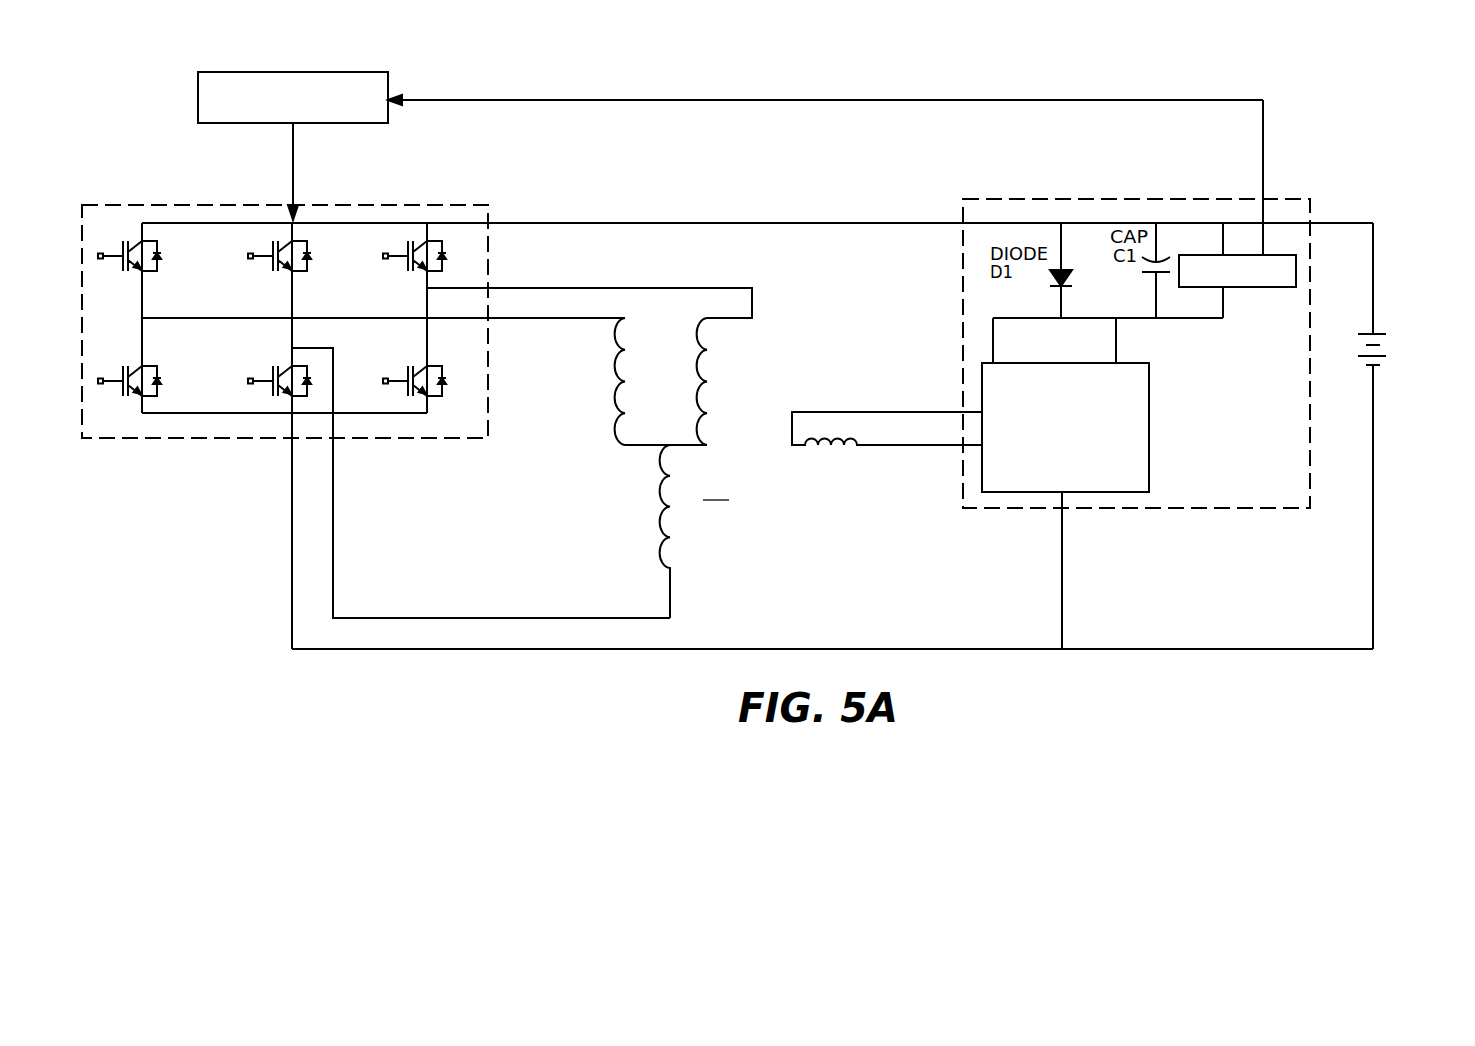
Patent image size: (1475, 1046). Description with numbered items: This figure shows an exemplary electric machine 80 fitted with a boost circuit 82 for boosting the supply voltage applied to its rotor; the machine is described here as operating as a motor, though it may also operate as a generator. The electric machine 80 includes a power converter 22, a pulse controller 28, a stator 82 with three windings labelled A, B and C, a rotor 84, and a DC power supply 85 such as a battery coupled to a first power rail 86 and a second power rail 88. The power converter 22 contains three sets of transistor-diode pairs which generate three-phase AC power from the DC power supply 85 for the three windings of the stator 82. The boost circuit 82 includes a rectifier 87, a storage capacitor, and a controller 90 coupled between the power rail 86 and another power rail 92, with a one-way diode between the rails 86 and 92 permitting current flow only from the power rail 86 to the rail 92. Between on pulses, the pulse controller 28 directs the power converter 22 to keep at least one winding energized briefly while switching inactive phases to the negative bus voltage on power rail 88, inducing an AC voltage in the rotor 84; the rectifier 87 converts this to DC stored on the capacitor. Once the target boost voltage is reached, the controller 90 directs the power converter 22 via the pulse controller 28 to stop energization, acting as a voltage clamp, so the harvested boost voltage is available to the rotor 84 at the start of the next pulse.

The power converter 22 is at (227, 456).
The pulse controller 28 is at (245, 72).
The electric machine 80 is at (338, 695).
The boost circuit / stator 82 is at (1115, 199).
The rotor 84 is at (843, 493).
The DC power supply 85 is at (1384, 320).
The first power rail 86 is at (628, 223).
The rectifier 87 is at (1072, 465).
The second power rail 88 is at (997, 649).
The controller 90 is at (1265, 288).
The power rail 92 is at (1186, 318).